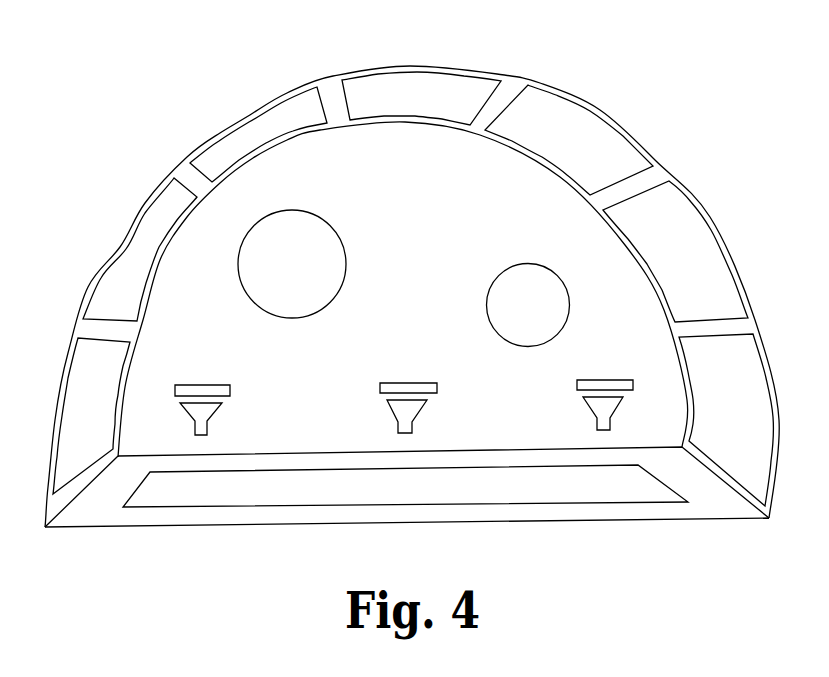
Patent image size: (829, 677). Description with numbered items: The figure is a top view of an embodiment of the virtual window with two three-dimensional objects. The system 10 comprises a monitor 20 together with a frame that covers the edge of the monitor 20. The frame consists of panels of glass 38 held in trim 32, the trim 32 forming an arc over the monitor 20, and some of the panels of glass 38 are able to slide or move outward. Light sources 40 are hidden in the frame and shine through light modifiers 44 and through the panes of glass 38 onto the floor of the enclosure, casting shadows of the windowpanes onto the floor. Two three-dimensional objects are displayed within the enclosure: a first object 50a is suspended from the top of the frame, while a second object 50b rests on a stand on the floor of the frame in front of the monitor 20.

The system 10 is at (620, 68).
The monitor 20 is at (497, 482).
The trim 32 is at (513, 72).
The panels of glass 38 is at (153, 223).
The light sources 40 is at (213, 410).
The light modifiers 44 is at (577, 386).
The 3D object 50a is at (337, 227).
The 3D object 50b is at (507, 268).